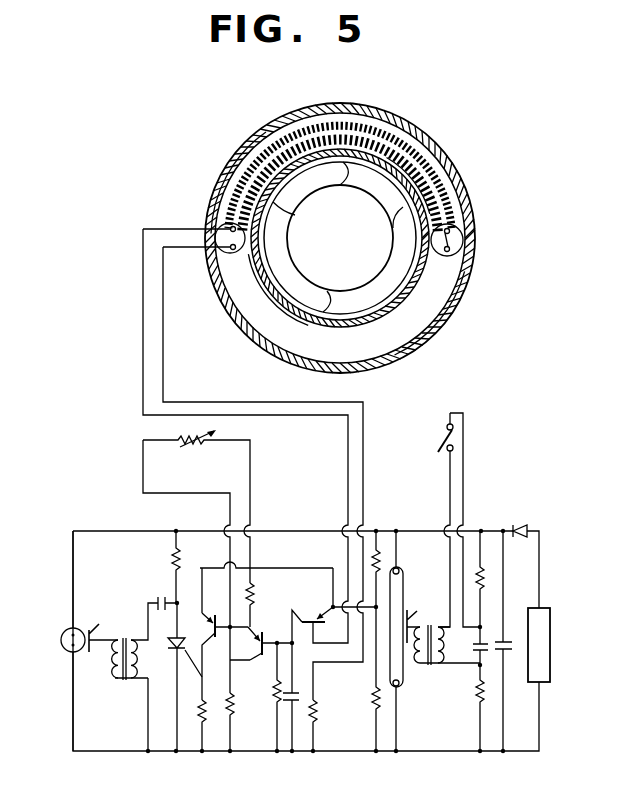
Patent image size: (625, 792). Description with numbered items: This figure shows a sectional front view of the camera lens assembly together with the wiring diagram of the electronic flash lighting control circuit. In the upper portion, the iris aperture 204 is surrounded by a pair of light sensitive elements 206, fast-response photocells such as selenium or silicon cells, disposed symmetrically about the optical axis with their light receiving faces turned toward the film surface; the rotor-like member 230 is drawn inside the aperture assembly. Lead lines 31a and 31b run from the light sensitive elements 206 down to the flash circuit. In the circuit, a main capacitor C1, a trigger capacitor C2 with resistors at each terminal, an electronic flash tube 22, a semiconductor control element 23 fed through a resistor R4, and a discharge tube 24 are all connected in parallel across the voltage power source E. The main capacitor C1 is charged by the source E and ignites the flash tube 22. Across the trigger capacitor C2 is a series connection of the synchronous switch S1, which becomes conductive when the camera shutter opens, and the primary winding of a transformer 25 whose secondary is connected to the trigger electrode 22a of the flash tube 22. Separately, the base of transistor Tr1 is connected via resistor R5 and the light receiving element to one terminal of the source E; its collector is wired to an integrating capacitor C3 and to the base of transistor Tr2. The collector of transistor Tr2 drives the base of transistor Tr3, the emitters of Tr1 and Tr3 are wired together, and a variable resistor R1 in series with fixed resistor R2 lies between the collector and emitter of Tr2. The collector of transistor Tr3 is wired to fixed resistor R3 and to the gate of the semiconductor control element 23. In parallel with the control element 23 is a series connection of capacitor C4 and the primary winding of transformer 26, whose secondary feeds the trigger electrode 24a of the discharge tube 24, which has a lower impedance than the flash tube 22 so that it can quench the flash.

The iris aperture 204 is at (395, 190).
The light sensitive elements 206 is at (218, 239).
The rotor 230 is at (315, 203).
The lead line 31a is at (363, 477).
The lead line 31b is at (348, 477).
The variable resistor R1 is at (190, 448).
The synchronous switch S1 is at (446, 429).
The discharge tube 24 is at (60, 640).
The trigger electrode 24a is at (100, 619).
The transformer 26 is at (122, 682).
The capacitor C4 is at (157, 600).
The resistor R4 is at (181, 568).
The semiconductor control element 23 is at (171, 650).
The transistor Tr3 is at (214, 638).
The fixed resistor R3 is at (203, 708).
The fixed resistor R2 is at (252, 594).
The transistor Tr2 is at (272, 625).
The integrating capacitor C3 is at (296, 696).
The transistor Tr1 is at (315, 612).
The resistor R5 is at (316, 718).
The electronic flash tube 22 is at (403, 579).
The trigger electrode 22a is at (408, 617).
The transformer 25 is at (428, 667).
The trigger capacitor C2 is at (476, 646).
The main capacitor C1 is at (503, 641).
The voltage power source E is at (539, 645).